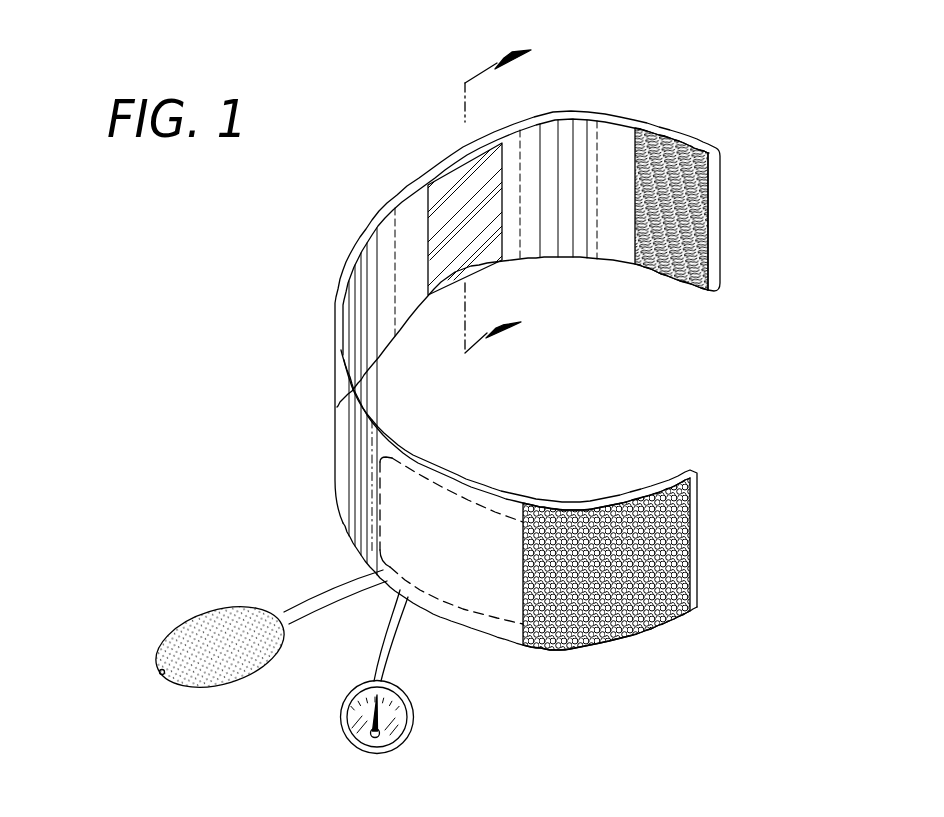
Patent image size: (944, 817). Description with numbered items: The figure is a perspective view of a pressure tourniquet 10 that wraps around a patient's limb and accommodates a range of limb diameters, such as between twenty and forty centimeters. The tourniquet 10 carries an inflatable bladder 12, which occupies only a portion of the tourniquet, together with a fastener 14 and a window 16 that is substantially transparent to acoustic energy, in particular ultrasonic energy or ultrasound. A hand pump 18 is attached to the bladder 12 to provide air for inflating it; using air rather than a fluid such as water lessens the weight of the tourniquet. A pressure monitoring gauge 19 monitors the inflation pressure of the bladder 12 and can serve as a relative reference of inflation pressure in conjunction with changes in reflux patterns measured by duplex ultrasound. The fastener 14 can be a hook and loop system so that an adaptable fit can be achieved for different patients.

The pressure tourniquet 10 is at (292, 369).
The inflatable bladder 12 is at (447, 500).
The fastener 14 is at (690, 207).
The window 16 is at (452, 183).
The hand pump 18 is at (210, 687).
The pressure monitoring gauge 19 is at (417, 713).